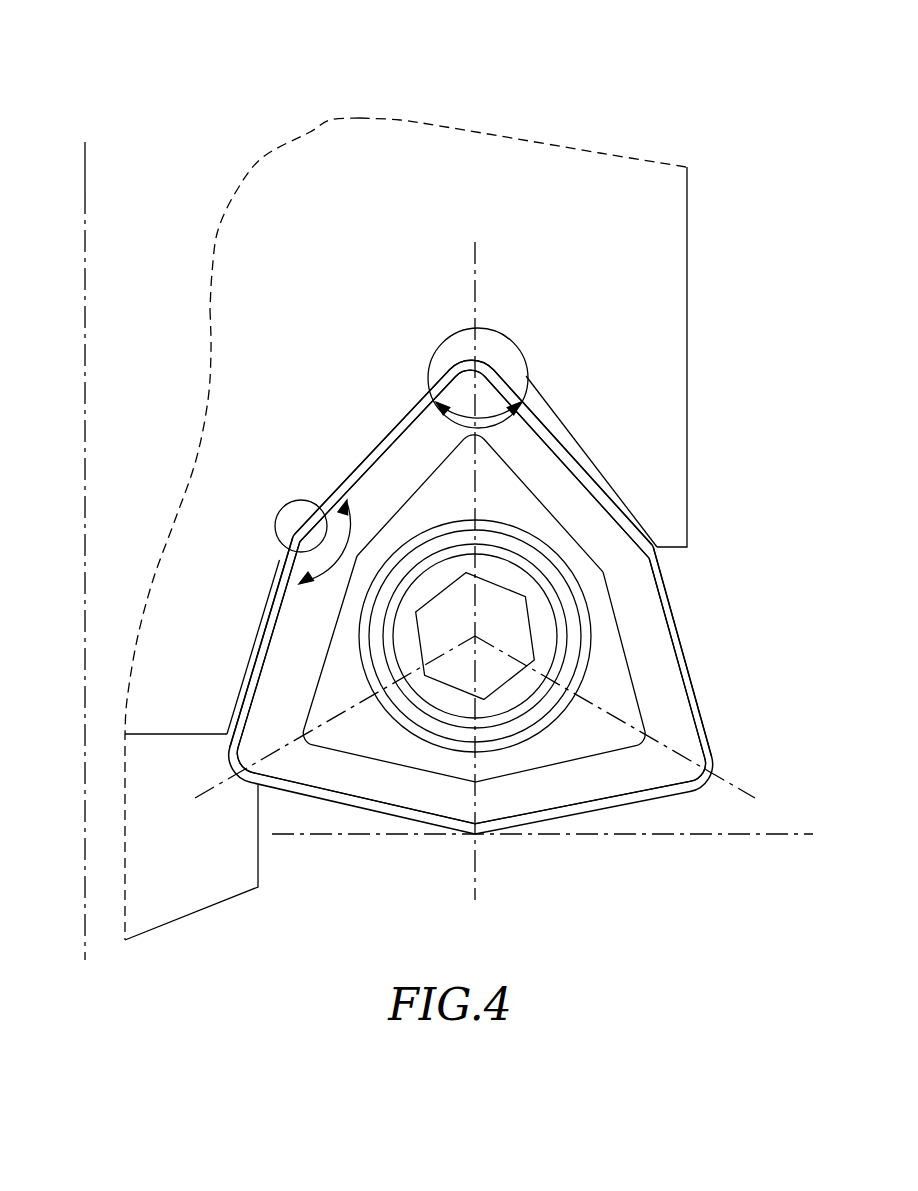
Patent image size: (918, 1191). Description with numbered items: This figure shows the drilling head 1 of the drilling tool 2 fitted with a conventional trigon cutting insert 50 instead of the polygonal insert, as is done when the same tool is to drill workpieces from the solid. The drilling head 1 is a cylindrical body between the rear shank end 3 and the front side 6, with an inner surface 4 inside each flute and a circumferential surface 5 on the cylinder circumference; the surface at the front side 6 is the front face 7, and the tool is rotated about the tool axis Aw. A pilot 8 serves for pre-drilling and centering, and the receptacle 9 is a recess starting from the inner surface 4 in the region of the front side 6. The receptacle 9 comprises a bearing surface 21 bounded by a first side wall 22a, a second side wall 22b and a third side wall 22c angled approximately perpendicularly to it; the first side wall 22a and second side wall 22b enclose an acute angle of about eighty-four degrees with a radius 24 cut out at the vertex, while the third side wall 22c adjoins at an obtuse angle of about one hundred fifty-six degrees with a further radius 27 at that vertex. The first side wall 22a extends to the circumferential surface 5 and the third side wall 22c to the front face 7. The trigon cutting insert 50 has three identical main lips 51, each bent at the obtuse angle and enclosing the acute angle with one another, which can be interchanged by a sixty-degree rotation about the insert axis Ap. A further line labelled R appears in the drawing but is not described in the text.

The drilling head 1 is at (465, 500).
The drilling tool 2 is at (465, 500).
The rear shank end 3 is at (405, 475).
The inner surface 4 is at (322, 150).
The circumferential surface 5 is at (688, 350).
The front side 6 is at (438, 876).
The front face 7 is at (175, 736).
The pilot 8 is at (170, 898).
The receptacle 9 is at (605, 483).
The bearing surface 21 is at (375, 445).
The first side wall 22a is at (563, 423).
The second side wall 22b is at (406, 410).
The third side wall 22c is at (240, 680).
The radius 24 is at (508, 336).
The further radius 27 is at (301, 501).
The trigon cutting insert 50 is at (668, 590).
The main lips 51 is at (280, 620).
The tool axis Aw is at (85, 165).
The insert axis Ap is at (478, 637).
The reference line R is at (683, 838).